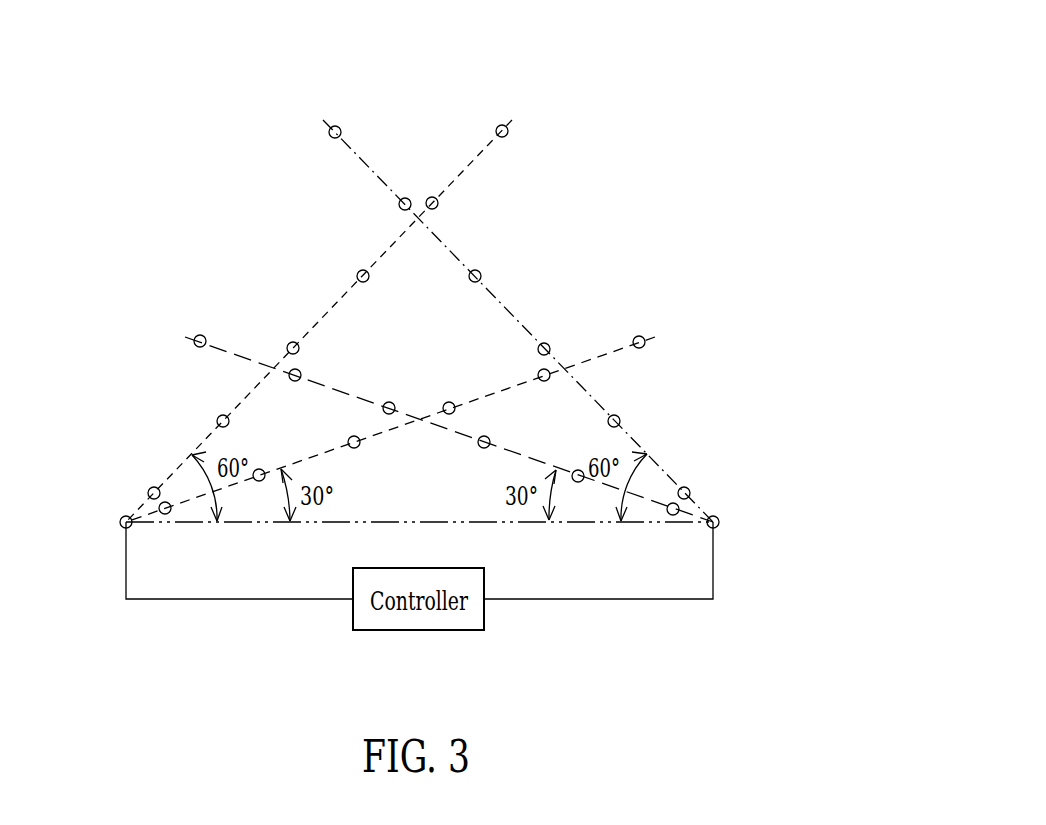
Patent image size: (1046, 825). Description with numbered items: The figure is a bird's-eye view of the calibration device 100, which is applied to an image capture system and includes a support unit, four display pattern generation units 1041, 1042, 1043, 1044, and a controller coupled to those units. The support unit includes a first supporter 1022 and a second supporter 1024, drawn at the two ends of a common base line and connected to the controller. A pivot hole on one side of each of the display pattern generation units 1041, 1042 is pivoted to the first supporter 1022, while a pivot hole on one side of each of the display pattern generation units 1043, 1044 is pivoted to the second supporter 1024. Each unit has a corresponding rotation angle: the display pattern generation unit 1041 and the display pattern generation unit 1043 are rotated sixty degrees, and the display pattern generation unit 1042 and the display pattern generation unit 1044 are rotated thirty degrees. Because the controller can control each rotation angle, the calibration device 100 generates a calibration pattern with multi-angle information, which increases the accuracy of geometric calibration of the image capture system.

The calibration device 100 is at (643, 65).
The first supporter 1022 is at (760, 503).
The second supporter 1024 is at (123, 522).
The display pattern generation unit 1041 is at (353, 148).
The display pattern generation unit 1042 is at (225, 350).
The display pattern generation unit 1043 is at (479, 157).
The display pattern generation unit 1044 is at (617, 349).